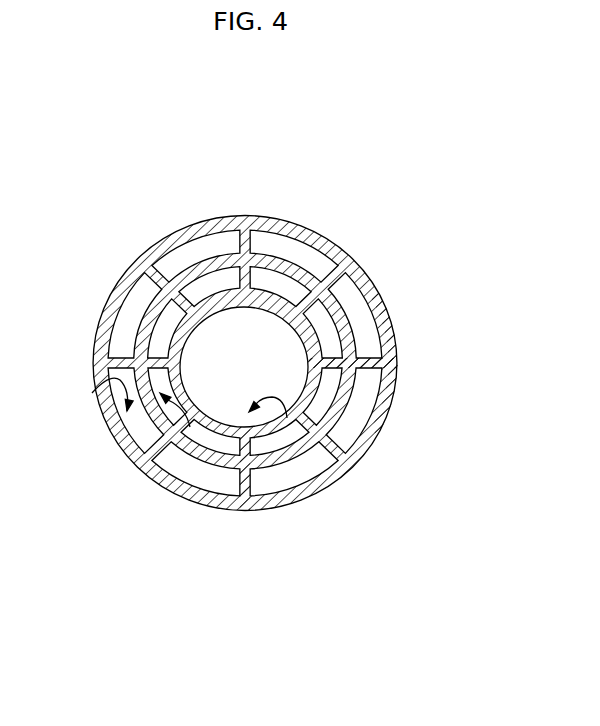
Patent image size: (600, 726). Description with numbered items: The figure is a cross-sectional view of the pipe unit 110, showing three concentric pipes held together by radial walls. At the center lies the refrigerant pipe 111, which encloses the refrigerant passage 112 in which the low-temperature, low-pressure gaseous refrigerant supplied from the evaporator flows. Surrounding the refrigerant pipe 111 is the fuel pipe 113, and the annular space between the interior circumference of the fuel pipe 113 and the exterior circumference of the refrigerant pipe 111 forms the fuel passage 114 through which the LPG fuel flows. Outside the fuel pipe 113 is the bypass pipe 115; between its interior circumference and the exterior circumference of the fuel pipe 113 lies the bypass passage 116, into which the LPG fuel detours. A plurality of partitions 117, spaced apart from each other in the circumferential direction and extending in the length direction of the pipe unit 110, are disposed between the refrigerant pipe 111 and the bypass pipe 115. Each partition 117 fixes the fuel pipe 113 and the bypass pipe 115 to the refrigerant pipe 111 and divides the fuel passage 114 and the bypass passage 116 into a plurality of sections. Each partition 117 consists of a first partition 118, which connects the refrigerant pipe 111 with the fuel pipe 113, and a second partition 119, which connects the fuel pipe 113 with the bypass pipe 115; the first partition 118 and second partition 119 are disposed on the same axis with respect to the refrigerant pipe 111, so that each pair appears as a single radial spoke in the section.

The pipe unit 110 is at (261, 170).
The refrigerant pipe 111 is at (208, 473).
The refrigerant passage 112 is at (250, 472).
The fuel pipe 113 is at (192, 270).
The fuel passage 114 is at (165, 428).
The bypass pipe 115 is at (306, 222).
The bypass passage 116 is at (92, 393).
The partition 117 is at (463, 283).
The first partition 118 is at (341, 358).
The second partition 119 is at (378, 343).